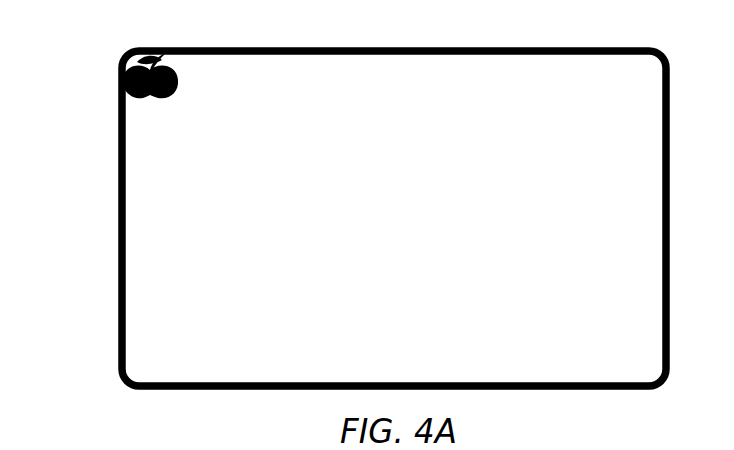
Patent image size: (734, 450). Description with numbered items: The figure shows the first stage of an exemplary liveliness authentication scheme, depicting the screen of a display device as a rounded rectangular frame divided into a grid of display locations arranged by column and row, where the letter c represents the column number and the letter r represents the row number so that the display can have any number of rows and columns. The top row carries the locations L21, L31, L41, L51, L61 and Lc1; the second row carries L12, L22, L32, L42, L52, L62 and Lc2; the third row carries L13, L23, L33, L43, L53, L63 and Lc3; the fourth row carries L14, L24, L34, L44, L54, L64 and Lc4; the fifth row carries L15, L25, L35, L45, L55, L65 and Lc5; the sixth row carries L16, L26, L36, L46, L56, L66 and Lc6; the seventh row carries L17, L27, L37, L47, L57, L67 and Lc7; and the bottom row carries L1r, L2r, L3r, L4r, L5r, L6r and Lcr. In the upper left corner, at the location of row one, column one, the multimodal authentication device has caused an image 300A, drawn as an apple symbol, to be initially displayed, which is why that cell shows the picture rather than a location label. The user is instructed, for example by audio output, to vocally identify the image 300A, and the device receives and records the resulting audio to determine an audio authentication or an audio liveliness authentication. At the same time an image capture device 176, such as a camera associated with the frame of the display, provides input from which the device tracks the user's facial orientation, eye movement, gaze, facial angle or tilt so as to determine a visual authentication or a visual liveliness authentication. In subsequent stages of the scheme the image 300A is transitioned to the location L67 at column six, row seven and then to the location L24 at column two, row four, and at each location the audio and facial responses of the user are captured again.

The image 300A is at (344, 196).
The image capture device 176 is at (191, 49).
The location L21 is at (232, 78).
The location L31 is at (309, 78).
The location L41 is at (387, 78).
The location L51 is at (465, 78).
The location L61 is at (542, 78).
The location Lc1 is at (620, 78).
The location L12 is at (155, 118).
The location L22 is at (232, 118).
The location L32 is at (309, 118).
The location L42 is at (387, 118).
The location L52 is at (465, 118).
The location L62 is at (542, 118).
The location Lc2 is at (620, 118).
The location L13 is at (155, 158).
The location L23 is at (232, 158).
The location L33 is at (309, 158).
The location L43 is at (387, 158).
The location L53 is at (465, 158).
The location L63 is at (542, 158).
The location Lc3 is at (620, 158).
The location L14 is at (155, 198).
The location L24 is at (232, 198).
The location L34 is at (309, 198).
The location L44 is at (387, 198).
The location L54 is at (465, 198).
The location L64 is at (542, 198).
The location Lc4 is at (620, 198).
The location L15 is at (155, 238).
The location L25 is at (232, 238).
The location L35 is at (309, 238).
The location L45 is at (387, 238).
The location L55 is at (465, 238).
The location L65 is at (542, 238).
The location Lc5 is at (620, 238).
The location L16 is at (155, 278).
The location L26 is at (232, 278).
The location L36 is at (309, 278).
The location L46 is at (387, 278).
The location L56 is at (465, 278).
The location L66 is at (542, 278).
The location Lc6 is at (620, 278).
The location L17 is at (155, 318).
The location L27 is at (232, 318).
The location L37 is at (309, 318).
The location L47 is at (387, 318).
The location L57 is at (465, 318).
The location L67 is at (542, 318).
The location Lc7 is at (620, 318).
The location L1r is at (156, 358).
The location L2r is at (233, 358).
The location L3r is at (310, 358).
The location L4r is at (388, 358).
The location L5r is at (466, 358).
The location L6r is at (543, 358).
The location Lcr is at (621, 358).